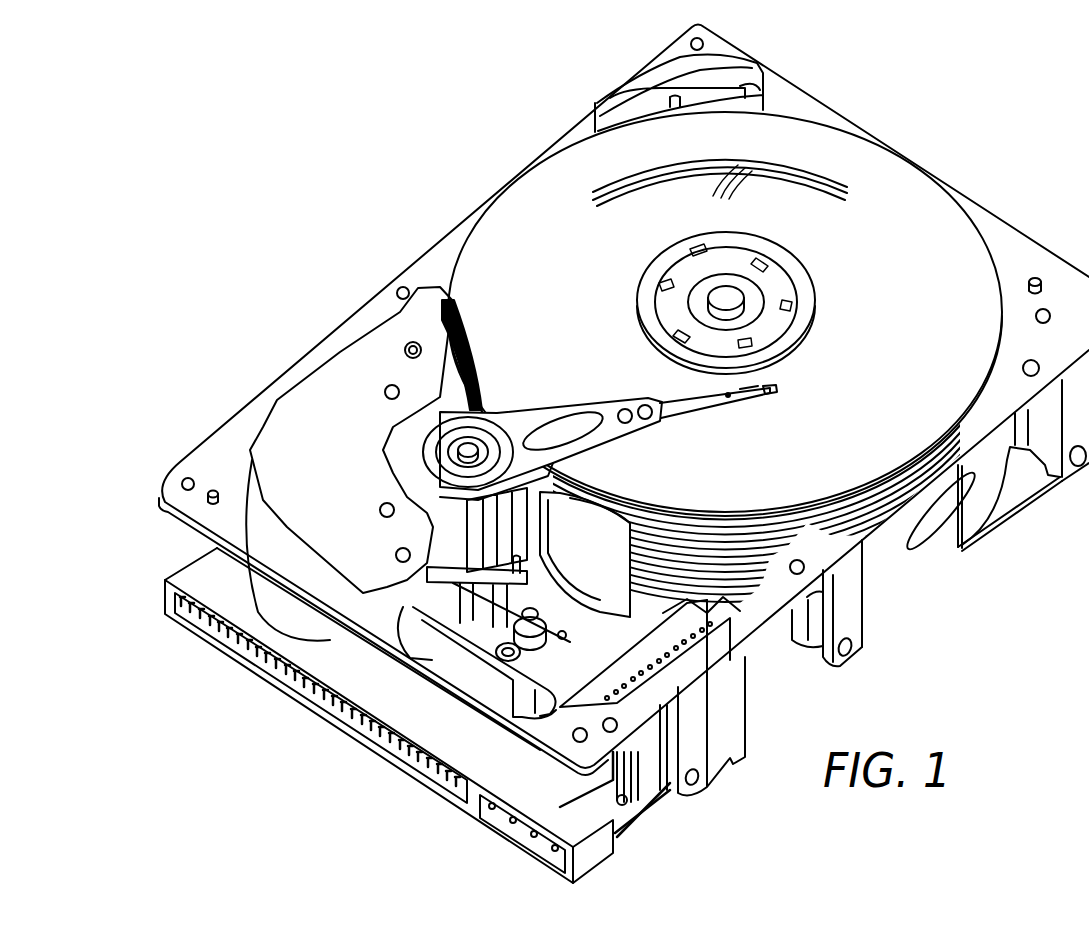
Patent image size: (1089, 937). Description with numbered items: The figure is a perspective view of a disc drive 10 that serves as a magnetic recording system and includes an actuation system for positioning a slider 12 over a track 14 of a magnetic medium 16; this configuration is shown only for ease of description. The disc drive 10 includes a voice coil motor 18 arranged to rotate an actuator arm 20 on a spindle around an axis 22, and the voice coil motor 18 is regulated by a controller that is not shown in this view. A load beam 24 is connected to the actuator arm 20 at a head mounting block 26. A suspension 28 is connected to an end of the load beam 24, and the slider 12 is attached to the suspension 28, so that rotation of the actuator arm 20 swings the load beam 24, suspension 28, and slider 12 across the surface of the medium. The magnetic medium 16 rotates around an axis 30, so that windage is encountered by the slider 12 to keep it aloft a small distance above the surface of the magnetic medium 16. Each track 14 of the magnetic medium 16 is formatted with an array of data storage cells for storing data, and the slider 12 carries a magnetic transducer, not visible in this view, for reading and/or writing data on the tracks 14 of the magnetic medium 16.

The disc drive 10 is at (975, 175).
The slider 12 is at (770, 388).
The track 14 is at (720, 191).
The magnetic medium 16 is at (950, 280).
The voice coil motor 18 is at (312, 396).
The actuator arm 20 is at (589, 430).
The axis 22 is at (466, 450).
The load beam 24 is at (700, 404).
The head mounting block 26 is at (641, 421).
The suspension 28 is at (755, 393).
The axis 30 is at (722, 292).